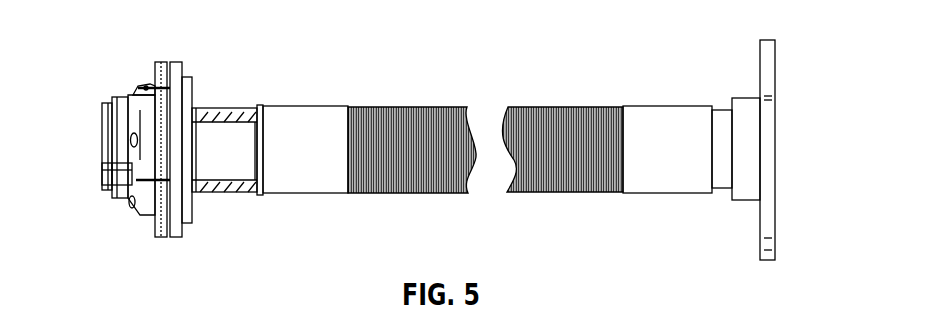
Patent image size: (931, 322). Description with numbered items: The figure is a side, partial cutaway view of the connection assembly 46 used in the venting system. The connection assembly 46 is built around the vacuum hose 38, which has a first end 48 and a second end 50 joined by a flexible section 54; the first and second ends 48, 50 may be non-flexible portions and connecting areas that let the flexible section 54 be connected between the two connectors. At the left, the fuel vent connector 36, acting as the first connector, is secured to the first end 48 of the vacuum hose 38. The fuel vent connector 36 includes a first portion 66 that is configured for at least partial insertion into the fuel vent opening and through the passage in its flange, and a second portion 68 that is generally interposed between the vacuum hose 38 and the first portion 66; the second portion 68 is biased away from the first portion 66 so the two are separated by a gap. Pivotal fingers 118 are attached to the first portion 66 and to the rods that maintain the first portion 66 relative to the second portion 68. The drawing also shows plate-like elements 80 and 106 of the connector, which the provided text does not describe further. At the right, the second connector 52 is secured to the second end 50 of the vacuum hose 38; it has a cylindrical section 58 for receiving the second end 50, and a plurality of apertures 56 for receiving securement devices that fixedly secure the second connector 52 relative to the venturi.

The fuel vent connector 36 is at (127, 212).
The vacuum hose 38 is at (318, 106).
The connection assembly 46 is at (485, 217).
The first end 48 is at (240, 107).
The second end 50 is at (672, 106).
The second connector 52 is at (771, 73).
The flexible section 54 is at (392, 107).
The apertures 56 is at (771, 249).
The cylindrical section 58 is at (747, 201).
The first portion 66 is at (137, 89).
The second portion 68 is at (193, 88).
The plate 80 is at (160, 62).
The plate 106 is at (177, 62).
The pivotal fingers 118 is at (110, 175).